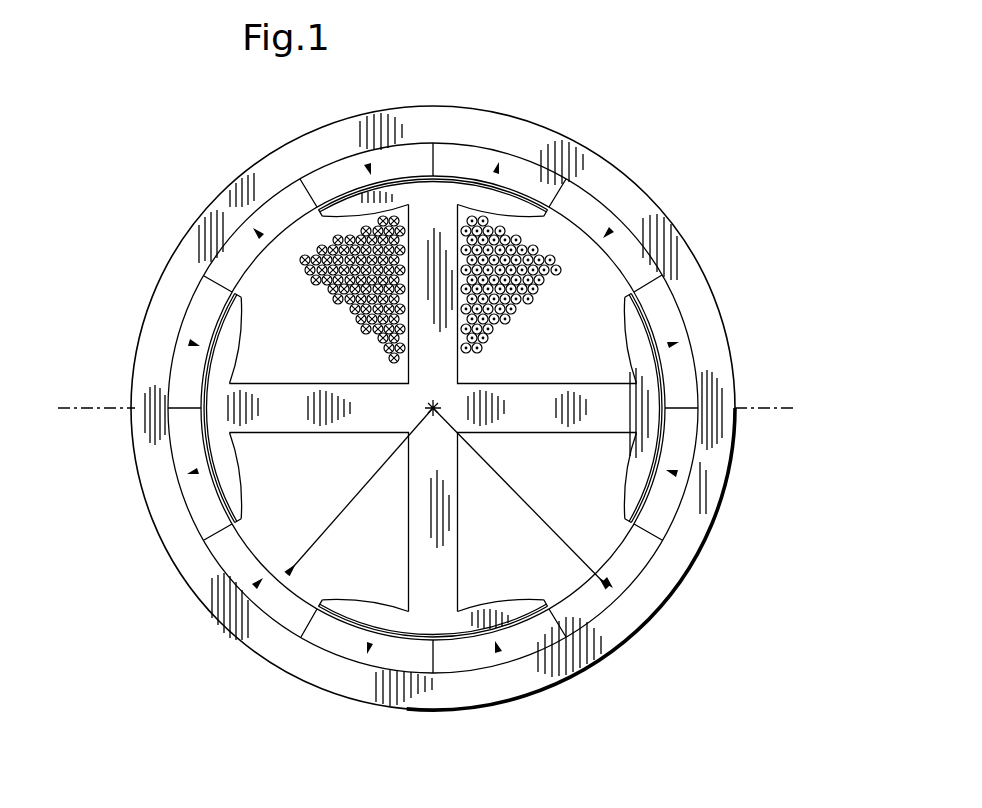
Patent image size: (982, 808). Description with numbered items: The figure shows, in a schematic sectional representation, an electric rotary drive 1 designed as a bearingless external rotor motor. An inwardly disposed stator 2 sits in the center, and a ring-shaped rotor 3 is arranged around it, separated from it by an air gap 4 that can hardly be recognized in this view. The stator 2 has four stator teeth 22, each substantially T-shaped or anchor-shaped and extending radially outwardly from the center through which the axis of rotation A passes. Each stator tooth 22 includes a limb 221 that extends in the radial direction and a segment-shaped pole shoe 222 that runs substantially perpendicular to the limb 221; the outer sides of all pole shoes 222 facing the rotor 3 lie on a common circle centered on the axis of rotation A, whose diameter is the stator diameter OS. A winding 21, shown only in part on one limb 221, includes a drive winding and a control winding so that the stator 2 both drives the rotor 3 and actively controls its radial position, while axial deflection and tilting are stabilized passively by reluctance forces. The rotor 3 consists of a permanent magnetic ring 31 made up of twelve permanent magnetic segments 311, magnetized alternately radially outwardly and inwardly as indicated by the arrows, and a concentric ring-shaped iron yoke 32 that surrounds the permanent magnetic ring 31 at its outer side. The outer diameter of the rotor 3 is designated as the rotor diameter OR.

The electric rotary drive 1 is at (638, 114).
The stator 2 is at (543, 382).
The winding 21 is at (313, 243).
The stator teeth 22 is at (297, 383).
The limb 221 is at (637, 413).
The pole shoe 222 is at (225, 338).
The rotor 3 is at (456, 105).
The permanent magnetic ring 31 is at (213, 562).
The permanent magnetic segments 311 is at (543, 180).
The iron yoke 32 is at (663, 588).
The air gap 4 is at (507, 630).
The axis of rotation A is at (428, 408).
The stator axis OS is at (360, 491).
The rotor axis OR is at (520, 497).